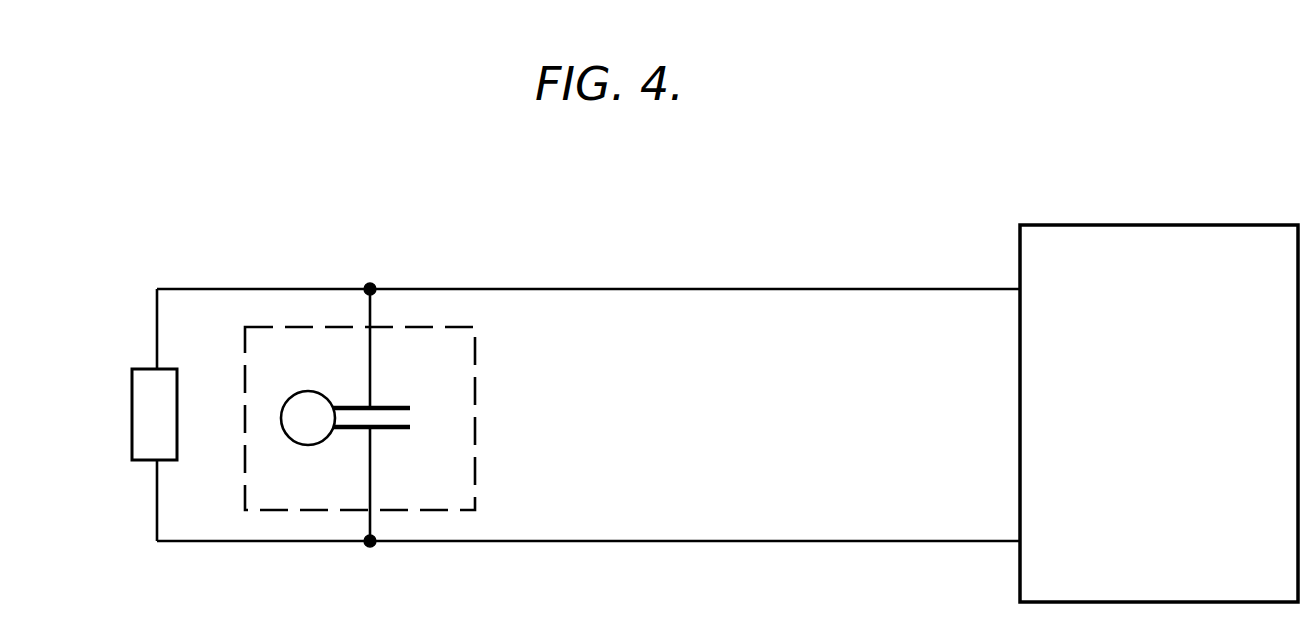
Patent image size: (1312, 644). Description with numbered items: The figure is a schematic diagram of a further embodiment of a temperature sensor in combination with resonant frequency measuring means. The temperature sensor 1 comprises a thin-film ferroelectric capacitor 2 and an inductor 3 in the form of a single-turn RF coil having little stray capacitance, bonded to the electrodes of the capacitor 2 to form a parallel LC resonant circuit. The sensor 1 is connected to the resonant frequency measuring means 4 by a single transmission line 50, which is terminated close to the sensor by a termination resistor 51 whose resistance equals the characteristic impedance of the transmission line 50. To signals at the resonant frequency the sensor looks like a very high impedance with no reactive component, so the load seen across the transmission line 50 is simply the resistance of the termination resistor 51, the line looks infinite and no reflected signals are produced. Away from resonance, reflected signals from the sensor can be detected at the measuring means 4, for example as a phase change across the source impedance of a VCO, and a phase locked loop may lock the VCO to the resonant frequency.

The temperature sensor 1 is at (475, 344).
The thin-film ferroelectric capacitor 2 is at (391, 429).
The inductor 3 is at (292, 399).
The resonant frequency measuring means 4 is at (1146, 224).
The transmission line 50 is at (770, 287).
The termination resistor 51 is at (130, 392).